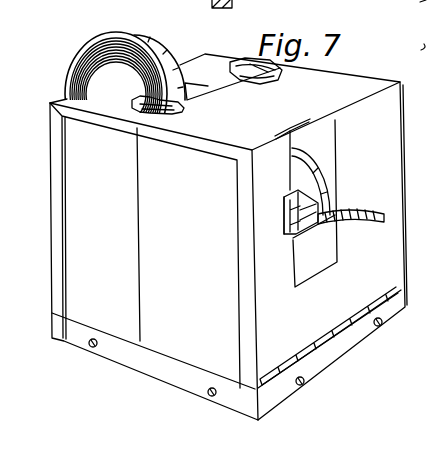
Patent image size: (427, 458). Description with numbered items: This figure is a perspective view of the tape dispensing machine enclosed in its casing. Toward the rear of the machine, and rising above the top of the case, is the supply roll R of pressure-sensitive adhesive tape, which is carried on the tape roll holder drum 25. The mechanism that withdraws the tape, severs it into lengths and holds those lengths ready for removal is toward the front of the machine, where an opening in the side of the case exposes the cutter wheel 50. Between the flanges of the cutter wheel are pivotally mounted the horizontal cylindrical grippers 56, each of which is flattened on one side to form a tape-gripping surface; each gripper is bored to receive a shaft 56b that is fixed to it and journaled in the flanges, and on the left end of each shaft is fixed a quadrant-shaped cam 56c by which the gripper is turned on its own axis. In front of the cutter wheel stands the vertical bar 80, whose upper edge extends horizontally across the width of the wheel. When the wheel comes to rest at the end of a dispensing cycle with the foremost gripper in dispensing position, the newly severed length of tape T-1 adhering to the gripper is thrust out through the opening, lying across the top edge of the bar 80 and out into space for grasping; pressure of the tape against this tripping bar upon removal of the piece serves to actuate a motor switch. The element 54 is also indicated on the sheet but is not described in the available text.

The tape guide 54 is at (48, 2).
The gripper 56 is at (98, 2).
The shaft 56b is at (121, 2).
The cam 56c is at (19, 33).
The supply roll R is at (82, 56).
The tape roll holder drum 25 is at (100, 78).
The cutter wheel 50 is at (308, 180).
The severed length of tape T-1 is at (345, 230).
The vertical bar 80 is at (310, 262).